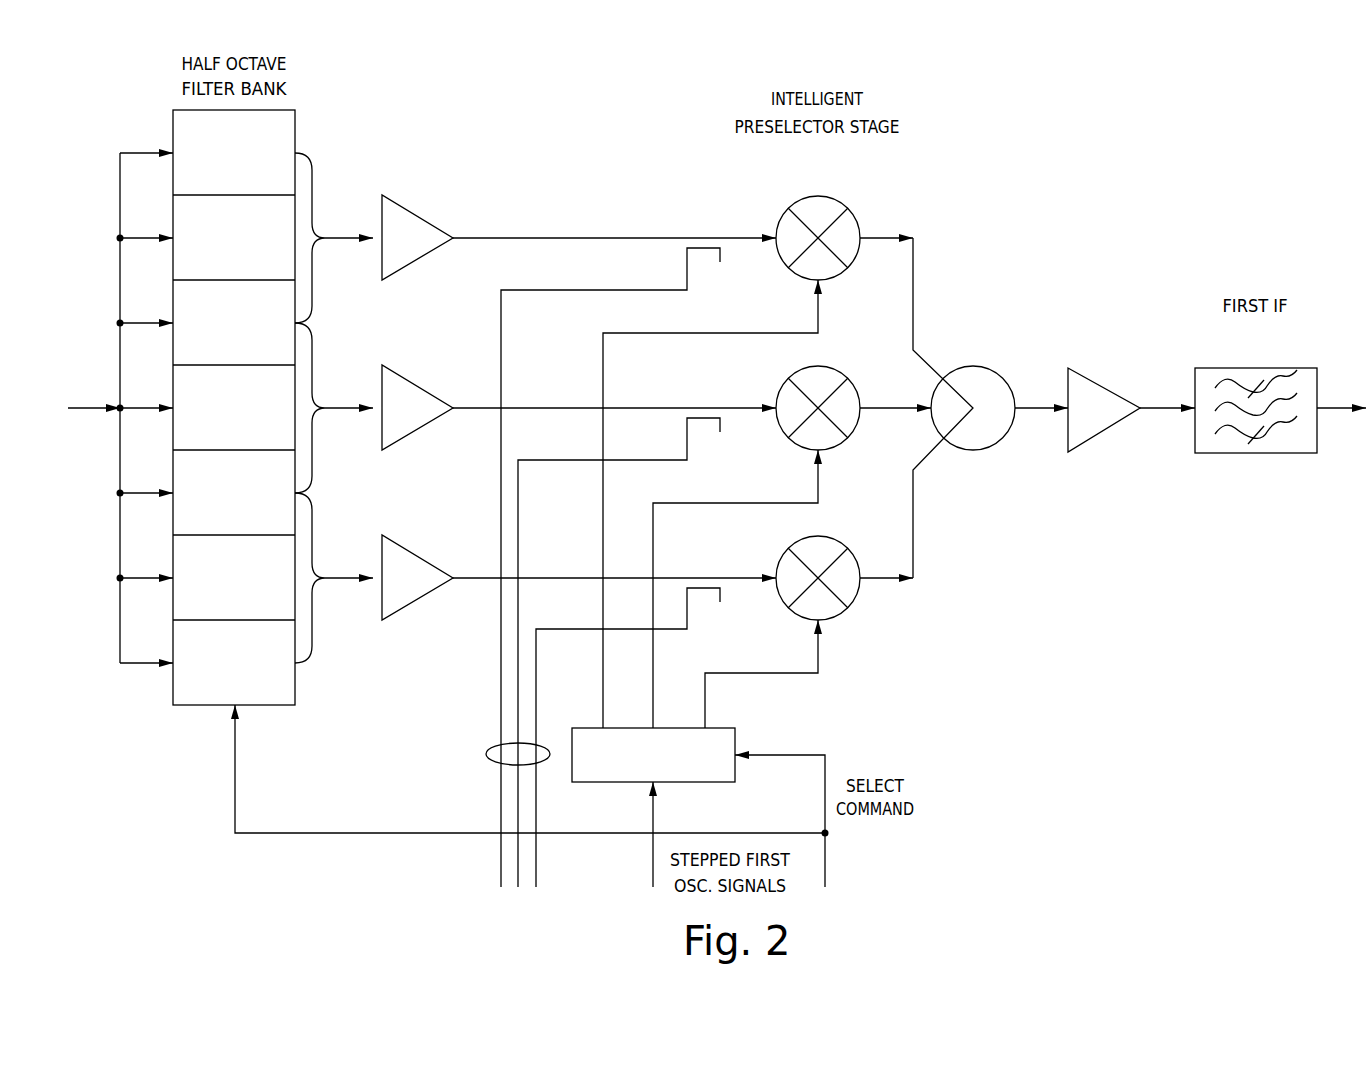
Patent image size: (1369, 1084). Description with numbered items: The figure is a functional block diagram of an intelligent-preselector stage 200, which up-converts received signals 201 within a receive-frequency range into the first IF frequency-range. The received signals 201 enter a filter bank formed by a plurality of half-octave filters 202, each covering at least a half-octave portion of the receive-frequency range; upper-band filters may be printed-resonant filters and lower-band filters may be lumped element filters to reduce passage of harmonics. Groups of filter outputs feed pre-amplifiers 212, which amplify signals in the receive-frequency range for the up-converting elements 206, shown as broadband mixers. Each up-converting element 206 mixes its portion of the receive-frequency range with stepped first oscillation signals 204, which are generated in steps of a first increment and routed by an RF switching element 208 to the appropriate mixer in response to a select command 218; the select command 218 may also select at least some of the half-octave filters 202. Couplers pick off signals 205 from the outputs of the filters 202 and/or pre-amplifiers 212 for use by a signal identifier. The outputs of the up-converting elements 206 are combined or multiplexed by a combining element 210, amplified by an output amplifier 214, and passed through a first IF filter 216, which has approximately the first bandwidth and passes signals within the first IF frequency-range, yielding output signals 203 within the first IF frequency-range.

The intelligent-preselector stage 200 is at (994, 104).
The received signals 201 is at (84, 404).
The half-octave filters 202 is at (173, 130).
The signals within the first IF frequency-range 203 is at (1339, 405).
The stepped first oscillation signals 204 is at (653, 859).
The coupled signals 205 is at (488, 755).
The up-converting elements 206 is at (839, 199).
The RF switching element 208 is at (726, 726).
The combining element 210 is at (993, 371).
The pre-amplifiers 212 is at (422, 213).
The output amplifier 214 is at (1108, 389).
The first IF filter 216 is at (1276, 365).
The select command 218 is at (827, 859).